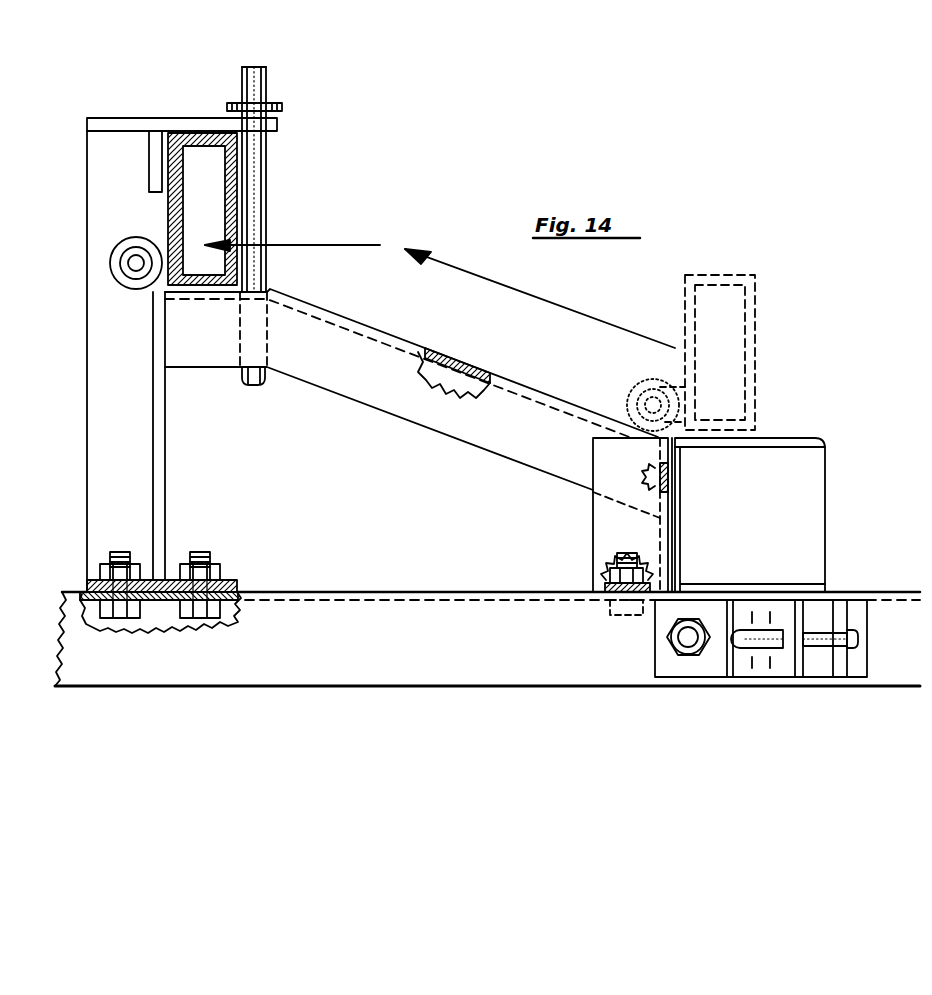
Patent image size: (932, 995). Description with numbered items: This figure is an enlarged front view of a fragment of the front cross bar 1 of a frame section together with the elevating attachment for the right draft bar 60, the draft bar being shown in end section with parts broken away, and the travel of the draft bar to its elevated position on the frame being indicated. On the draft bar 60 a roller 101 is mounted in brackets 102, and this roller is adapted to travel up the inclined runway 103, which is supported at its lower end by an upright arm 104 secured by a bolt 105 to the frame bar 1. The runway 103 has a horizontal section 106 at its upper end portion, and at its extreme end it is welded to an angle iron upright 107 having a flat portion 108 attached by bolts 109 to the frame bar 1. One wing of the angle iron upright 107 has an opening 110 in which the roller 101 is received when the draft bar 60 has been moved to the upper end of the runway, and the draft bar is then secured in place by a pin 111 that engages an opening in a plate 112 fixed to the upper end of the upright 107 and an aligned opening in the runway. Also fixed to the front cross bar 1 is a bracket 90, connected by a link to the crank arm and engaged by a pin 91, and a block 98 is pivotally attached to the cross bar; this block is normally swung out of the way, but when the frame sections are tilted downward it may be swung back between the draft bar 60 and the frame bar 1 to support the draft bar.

The front cross bar 1 is at (366, 613).
The draft bar 60 is at (237, 157).
The bracket 90 is at (838, 607).
The pin 91 is at (860, 632).
The block 98 is at (817, 458).
The roller 101 is at (145, 282).
The brackets 102 is at (168, 258).
The inclined runway 103 is at (395, 338).
The upright arm 104 is at (593, 503).
The bolt 105 is at (606, 560).
The horizontal section 106 is at (268, 289).
The angle iron upright 107 is at (160, 495).
The flat portion 108 is at (172, 580).
The bolts 109 is at (208, 557).
The opening 110 is at (163, 195).
The pin 111 is at (242, 93).
The plate 112 is at (277, 124).